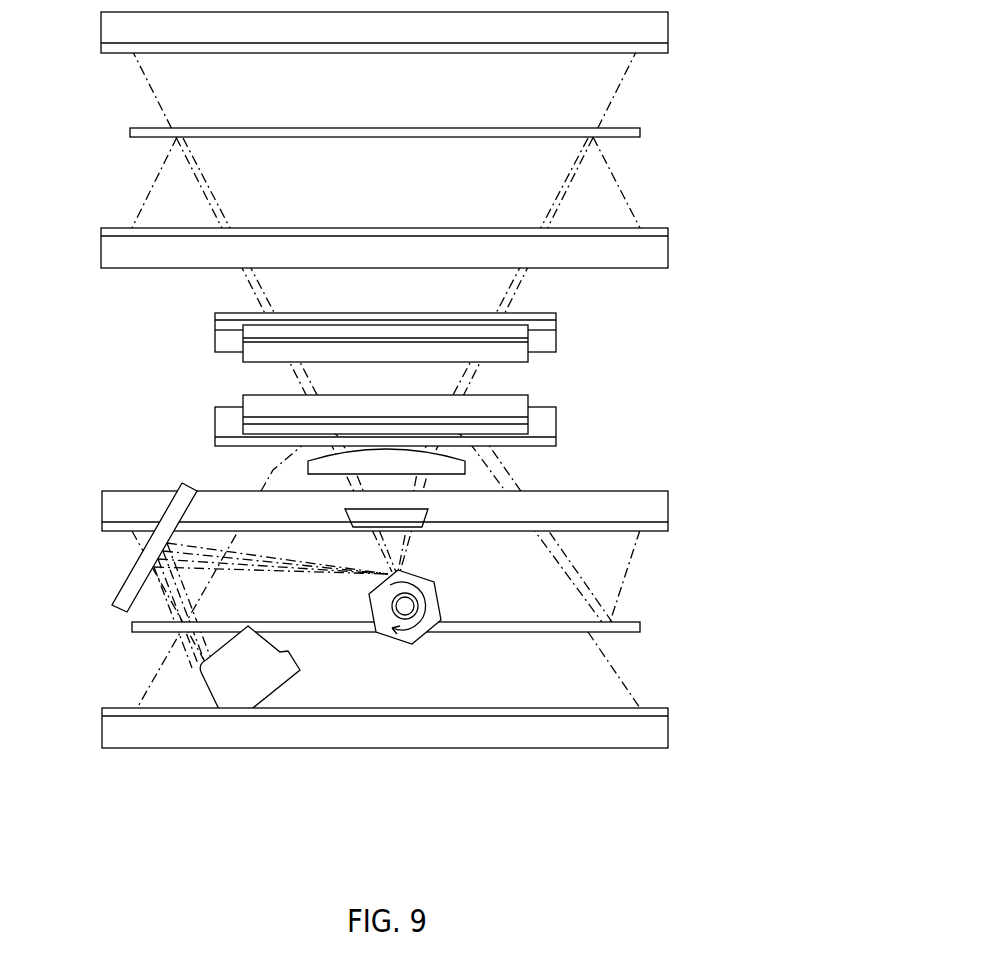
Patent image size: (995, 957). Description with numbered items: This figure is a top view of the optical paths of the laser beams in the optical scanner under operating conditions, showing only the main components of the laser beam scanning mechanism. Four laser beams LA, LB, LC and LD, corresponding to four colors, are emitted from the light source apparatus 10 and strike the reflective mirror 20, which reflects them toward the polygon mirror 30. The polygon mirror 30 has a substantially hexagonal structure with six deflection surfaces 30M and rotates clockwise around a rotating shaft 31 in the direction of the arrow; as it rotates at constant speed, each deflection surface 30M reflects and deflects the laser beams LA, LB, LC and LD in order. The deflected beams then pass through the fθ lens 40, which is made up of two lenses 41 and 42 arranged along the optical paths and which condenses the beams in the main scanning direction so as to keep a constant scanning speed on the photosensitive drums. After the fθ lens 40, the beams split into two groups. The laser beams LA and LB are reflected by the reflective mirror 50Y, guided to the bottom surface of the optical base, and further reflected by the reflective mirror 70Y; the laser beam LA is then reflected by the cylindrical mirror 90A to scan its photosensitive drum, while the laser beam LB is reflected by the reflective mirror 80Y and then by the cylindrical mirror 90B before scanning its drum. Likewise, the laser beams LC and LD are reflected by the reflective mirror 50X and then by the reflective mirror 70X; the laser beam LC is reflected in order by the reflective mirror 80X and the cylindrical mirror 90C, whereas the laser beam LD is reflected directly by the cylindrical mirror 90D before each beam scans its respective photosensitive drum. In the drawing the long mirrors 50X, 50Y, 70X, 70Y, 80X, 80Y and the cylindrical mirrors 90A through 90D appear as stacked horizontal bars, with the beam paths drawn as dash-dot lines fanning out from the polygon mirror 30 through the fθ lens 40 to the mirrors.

The light source apparatus 10 is at (258, 693).
The reflective mirror 20 is at (137, 562).
The polygon mirror 30 is at (419, 618).
The deflection surface 30M is at (442, 594).
The rotating shaft 31 is at (418, 620).
The fθ lens 40 is at (429, 541).
The lens 41 is at (418, 522).
The lens 42 is at (312, 467).
The reflective mirror 50X is at (520, 403).
The reflective mirror 50Y is at (257, 357).
The reflective mirror 70X is at (547, 417).
The reflective mirror 70Y is at (227, 339).
The reflective mirror 80X is at (641, 626).
The reflective mirror 80Y is at (641, 132).
The cylindrical mirror 90A is at (660, 23).
The cylindrical mirror 90B is at (660, 252).
The cylindrical mirror 90C is at (660, 502).
The cylindrical mirror 90D is at (660, 732).
The laser beam LA is at (620, 83).
The laser beam LB is at (619, 186).
The laser beam LC is at (625, 563).
The laser beam LD is at (607, 677).